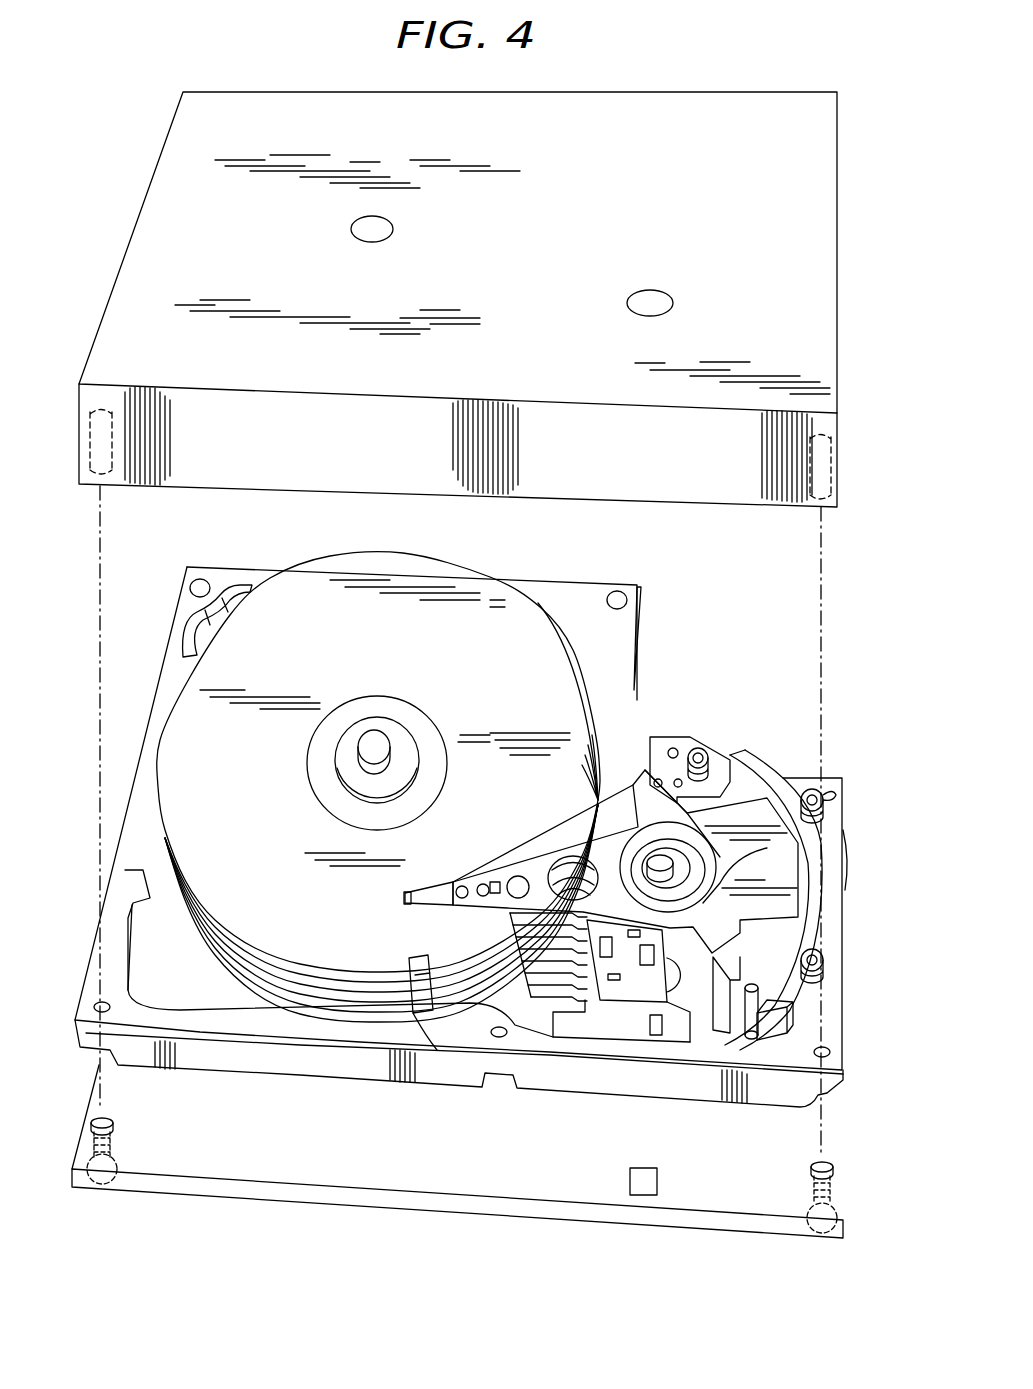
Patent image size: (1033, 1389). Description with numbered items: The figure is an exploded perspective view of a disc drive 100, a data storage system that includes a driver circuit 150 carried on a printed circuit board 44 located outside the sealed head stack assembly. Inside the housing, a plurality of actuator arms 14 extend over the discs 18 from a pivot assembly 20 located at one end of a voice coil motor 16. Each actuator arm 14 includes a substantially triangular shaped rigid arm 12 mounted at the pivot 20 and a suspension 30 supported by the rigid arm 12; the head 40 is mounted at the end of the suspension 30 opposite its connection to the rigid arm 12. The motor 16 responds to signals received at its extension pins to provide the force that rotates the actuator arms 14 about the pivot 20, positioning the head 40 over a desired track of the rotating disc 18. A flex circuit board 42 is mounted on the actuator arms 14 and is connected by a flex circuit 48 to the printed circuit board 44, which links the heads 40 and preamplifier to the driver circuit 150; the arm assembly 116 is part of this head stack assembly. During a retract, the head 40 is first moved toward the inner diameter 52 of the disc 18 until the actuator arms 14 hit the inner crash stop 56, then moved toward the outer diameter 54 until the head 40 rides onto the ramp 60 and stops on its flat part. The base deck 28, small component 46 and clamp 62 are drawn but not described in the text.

The disc drive 100 is at (160, 1235).
The rigid arm 12 is at (548, 860).
The actuator arm 14 is at (600, 852).
The voice coil motor 16 is at (740, 858).
The disc 18 is at (337, 572).
The pivot assembly 20 is at (660, 858).
The base deck 28 is at (275, 1068).
The suspension 30 is at (449, 895).
The head 40 is at (405, 895).
The flex circuit board 42 is at (637, 988).
The printed circuit board 44 is at (547, 1212).
The head gimbal 46 is at (492, 880).
The flex circuit 48 is at (712, 995).
The inner diameter 52 is at (463, 714).
The outer diameter 54 is at (556, 664).
The inner crash stop 56 is at (702, 752).
The ramp 60 is at (423, 1007).
The flex circuit clamp 62 is at (408, 958).
The arm assembly 116 is at (610, 912).
The driver circuit 150 is at (660, 1180).